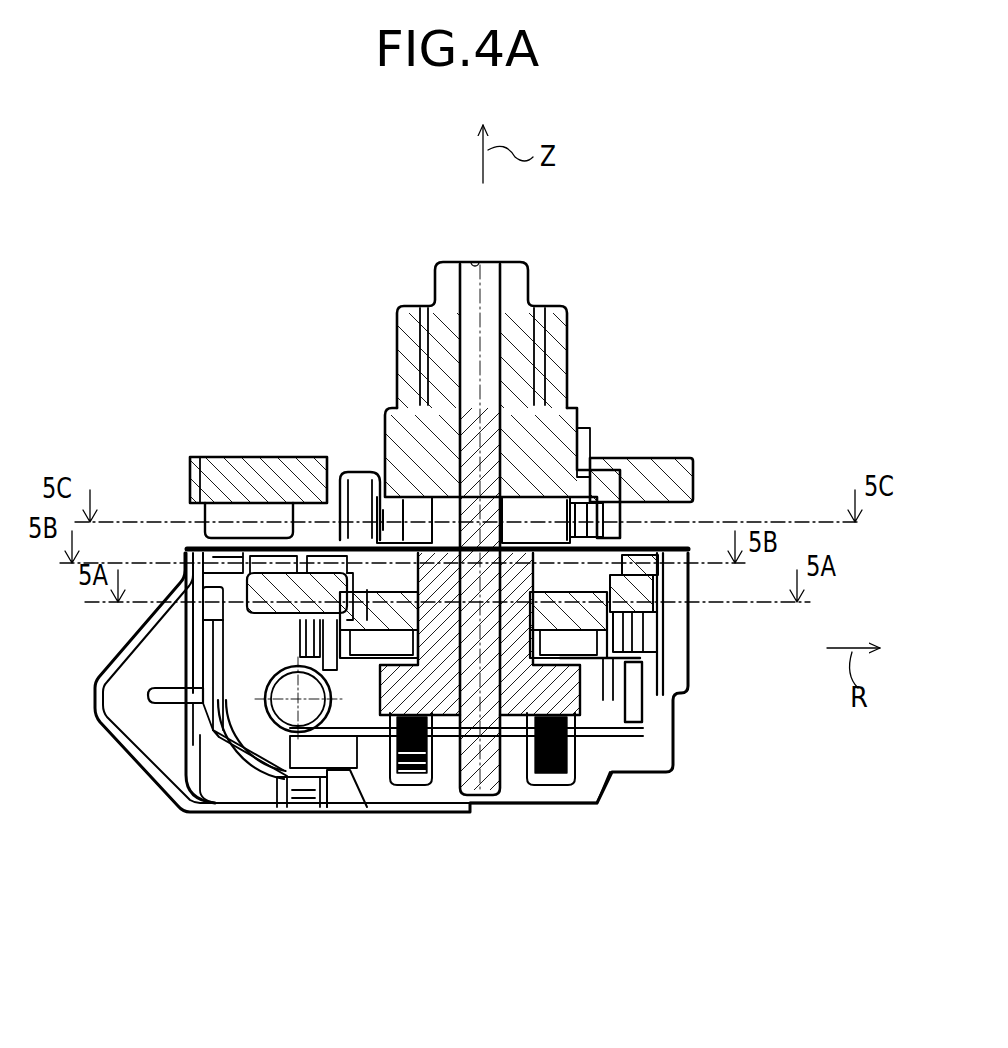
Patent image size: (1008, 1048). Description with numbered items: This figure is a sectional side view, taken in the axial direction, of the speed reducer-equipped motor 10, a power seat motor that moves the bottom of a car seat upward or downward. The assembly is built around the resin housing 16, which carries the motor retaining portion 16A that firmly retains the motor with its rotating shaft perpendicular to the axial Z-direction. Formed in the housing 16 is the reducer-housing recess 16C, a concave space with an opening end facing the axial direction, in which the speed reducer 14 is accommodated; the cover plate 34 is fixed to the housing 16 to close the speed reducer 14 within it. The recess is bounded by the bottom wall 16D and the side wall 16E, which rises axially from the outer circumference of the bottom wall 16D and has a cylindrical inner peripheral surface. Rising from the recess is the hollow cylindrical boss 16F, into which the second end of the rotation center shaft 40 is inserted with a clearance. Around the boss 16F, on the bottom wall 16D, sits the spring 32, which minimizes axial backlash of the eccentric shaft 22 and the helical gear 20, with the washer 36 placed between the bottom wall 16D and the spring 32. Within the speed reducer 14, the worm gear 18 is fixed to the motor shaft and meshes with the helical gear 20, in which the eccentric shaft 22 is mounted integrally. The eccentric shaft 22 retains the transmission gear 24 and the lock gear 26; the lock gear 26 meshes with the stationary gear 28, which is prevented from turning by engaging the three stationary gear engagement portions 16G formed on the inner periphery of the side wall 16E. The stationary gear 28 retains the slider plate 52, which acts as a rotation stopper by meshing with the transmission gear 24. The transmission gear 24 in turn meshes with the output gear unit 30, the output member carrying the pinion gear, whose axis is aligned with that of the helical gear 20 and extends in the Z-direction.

The speed reducer-equipped motor 10 is at (228, 172).
The speed reducer 14 is at (310, 530).
The housing 16 is at (148, 788).
The motor retaining portion 16A is at (93, 718).
The reducer-housing recess 16C is at (305, 518).
The bottom wall 16D is at (475, 800).
The side wall 16E is at (662, 630).
The hollow cylindrical boss 16F is at (428, 783).
The stationary gear engagement portion 16G is at (200, 624).
The worm gear 18 is at (250, 775).
The helical gear 20 is at (620, 775).
The eccentric shaft 22 is at (650, 697).
The transmission gear 24 is at (588, 453).
The lock gear 26 is at (345, 772).
The stationary gear 28 is at (665, 608).
The output gear unit 30 is at (560, 307).
The spring 32 is at (590, 770).
The cover plate 34 is at (680, 457).
The washer 36 is at (560, 790).
The rotation center shaft 40 is at (497, 790).
The slider plate 52 is at (375, 465).